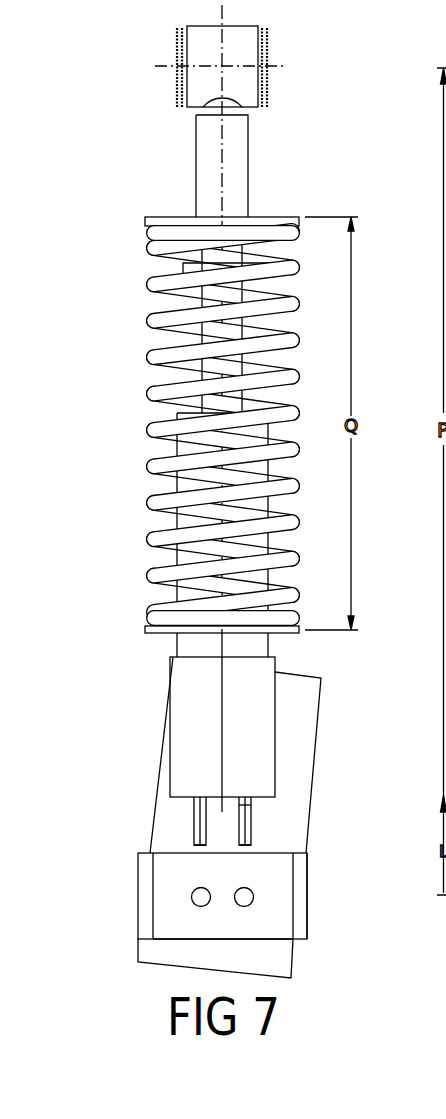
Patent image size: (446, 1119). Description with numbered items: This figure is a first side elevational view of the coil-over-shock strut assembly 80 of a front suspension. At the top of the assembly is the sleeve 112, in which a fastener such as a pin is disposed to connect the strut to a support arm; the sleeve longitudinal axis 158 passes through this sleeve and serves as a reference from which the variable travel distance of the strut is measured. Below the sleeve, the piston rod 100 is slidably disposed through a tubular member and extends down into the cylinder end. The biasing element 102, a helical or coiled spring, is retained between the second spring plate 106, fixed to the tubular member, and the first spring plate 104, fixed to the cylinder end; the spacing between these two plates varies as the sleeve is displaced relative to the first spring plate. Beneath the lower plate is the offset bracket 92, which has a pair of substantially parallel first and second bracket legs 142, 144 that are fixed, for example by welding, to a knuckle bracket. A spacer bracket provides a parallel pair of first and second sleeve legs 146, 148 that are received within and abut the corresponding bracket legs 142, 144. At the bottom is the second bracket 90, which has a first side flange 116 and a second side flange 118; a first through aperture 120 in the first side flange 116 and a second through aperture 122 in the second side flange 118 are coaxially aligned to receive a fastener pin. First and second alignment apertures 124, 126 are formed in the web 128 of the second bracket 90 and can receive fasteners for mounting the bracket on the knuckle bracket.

The coil-over-shock strut assembly 80 is at (306, 184).
The second bracket 90 is at (283, 872).
The offset bracket 92 is at (187, 692).
The piston rod 100 is at (203, 305).
The biasing element 102 is at (179, 428).
The first spring plate 104 is at (142, 628).
The second spring plate 106 is at (155, 224).
The sleeve 112 is at (207, 33).
The first side flange 116 is at (302, 922).
The second side flange 118 is at (147, 928).
The first through aperture 120 is at (295, 907).
The second through aperture 122 is at (147, 900).
The first alignment aperture 124 is at (200, 893).
The second alignment aperture 126 is at (237, 891).
The web 128 is at (165, 888).
The first bracket leg 142 is at (252, 812).
The second bracket leg 144 is at (197, 812).
The first sleeve leg 146 is at (232, 824).
The second sleeve leg 148 is at (207, 840).
The sleeve longitudinal axis 158 is at (270, 66).